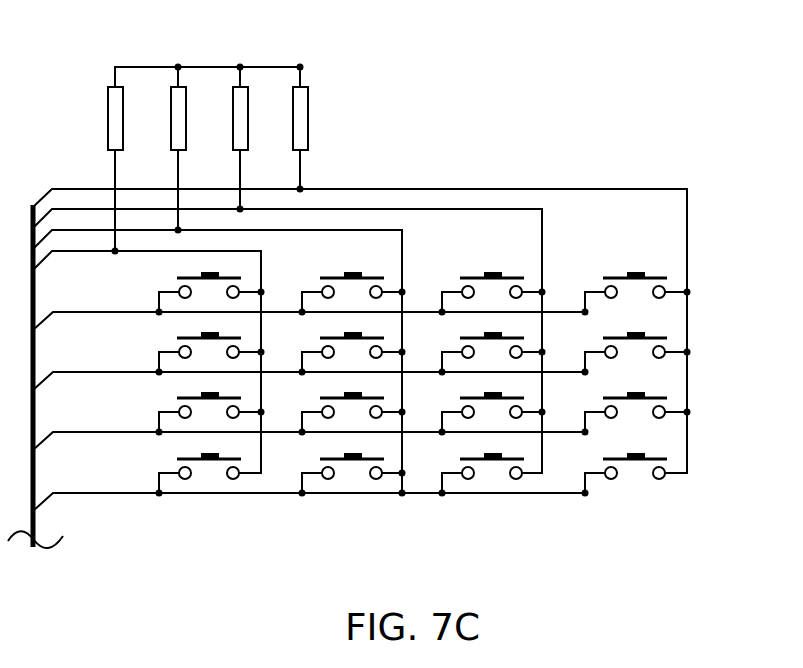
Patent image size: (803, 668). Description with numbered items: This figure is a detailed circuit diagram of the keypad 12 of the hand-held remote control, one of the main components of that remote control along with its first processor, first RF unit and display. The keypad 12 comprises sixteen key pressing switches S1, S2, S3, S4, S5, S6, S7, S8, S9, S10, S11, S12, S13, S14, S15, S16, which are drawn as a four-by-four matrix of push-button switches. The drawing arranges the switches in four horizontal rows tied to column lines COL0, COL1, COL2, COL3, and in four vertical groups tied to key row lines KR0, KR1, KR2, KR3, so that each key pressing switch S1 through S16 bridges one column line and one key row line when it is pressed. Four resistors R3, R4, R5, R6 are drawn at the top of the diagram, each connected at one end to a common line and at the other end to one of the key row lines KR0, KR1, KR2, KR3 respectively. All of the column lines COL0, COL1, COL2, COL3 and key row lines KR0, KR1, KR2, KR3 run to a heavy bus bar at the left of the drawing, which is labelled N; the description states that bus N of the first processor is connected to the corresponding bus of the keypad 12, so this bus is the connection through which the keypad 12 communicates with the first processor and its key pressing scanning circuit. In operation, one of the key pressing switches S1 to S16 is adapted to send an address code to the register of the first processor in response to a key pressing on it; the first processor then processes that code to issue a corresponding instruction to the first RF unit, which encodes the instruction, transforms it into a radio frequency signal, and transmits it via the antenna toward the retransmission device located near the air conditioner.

The keypad 12 is at (372, 67).
The resistor R3 is at (102, 171).
The resistor R4 is at (165, 160).
The resistor R5 is at (228, 150).
The resistor R6 is at (286, 140).
The key row line KR0 is at (360, 323).
The key row line KR1 is at (287, 333).
The key row line KR2 is at (219, 355).
The key row line KR3 is at (147, 354).
The column line COL0 is at (309, 313).
The column line COL1 is at (309, 373).
The column line COL2 is at (309, 433).
The column line COL3 is at (309, 494).
The bus N is at (35, 388).
The key pressing switch S1 is at (201, 294).
The key pressing switch S2 is at (201, 354).
The key pressing switch S3 is at (201, 414).
The key pressing switch S4 is at (199, 475).
The key pressing switch S5 is at (343, 294).
The key pressing switch S6 is at (343, 354).
The key pressing switch S7 is at (343, 414).
The key pressing switch S8 is at (343, 475).
The key pressing switch S9 is at (483, 294).
The key pressing switch S10 is at (483, 354).
The key pressing switch S11 is at (483, 414).
The key pressing switch S12 is at (481, 475).
The key pressing switch S13 is at (627, 294).
The key pressing switch S14 is at (627, 354).
The key pressing switch S15 is at (627, 414).
The key pressing switch S16 is at (625, 475).